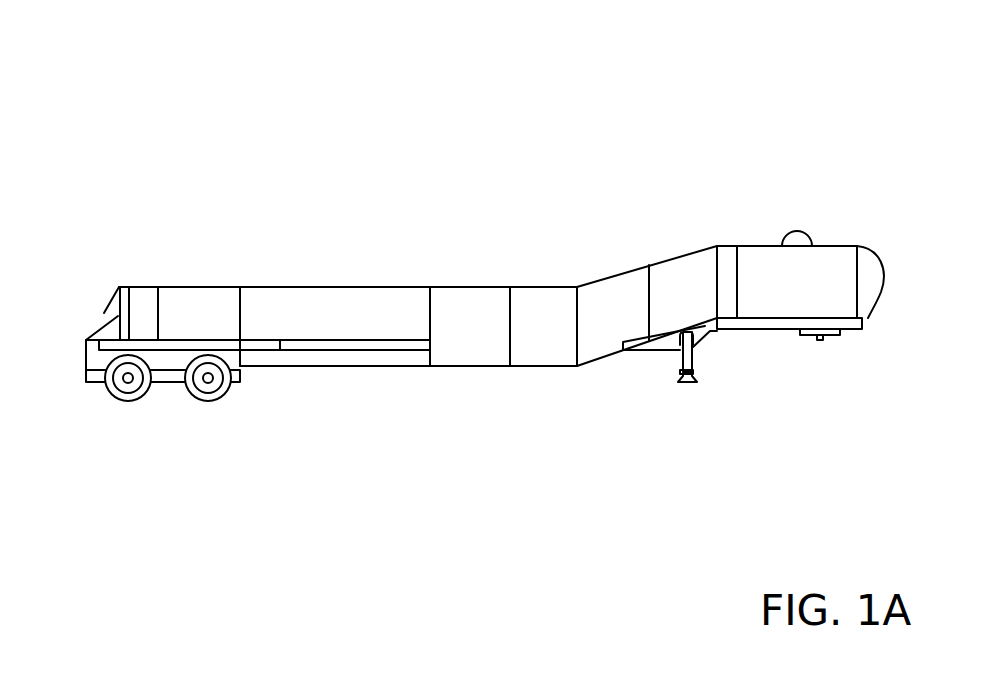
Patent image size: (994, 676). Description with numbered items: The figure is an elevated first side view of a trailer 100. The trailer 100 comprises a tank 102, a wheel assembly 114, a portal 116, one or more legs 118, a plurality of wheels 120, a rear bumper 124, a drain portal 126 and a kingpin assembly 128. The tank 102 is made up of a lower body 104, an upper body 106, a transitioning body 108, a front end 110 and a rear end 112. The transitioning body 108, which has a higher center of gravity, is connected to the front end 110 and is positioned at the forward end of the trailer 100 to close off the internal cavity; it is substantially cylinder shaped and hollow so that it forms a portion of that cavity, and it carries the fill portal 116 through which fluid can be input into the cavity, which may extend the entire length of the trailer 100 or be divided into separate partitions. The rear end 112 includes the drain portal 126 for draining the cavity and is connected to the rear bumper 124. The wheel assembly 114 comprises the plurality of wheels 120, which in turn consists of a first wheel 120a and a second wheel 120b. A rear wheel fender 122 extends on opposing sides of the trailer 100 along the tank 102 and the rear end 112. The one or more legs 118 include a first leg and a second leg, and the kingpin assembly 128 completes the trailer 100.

The trailer 100 is at (483, 303).
The tank 102 is at (330, 300).
The lower body 104 is at (212, 312).
The upper body 106 is at (761, 270).
The transitioning body 108 is at (622, 298).
The front end 110 is at (870, 308).
The rear end 112 is at (120, 287).
The wheel assembly 114 is at (240, 377).
The portal 116 is at (812, 240).
The one or more legs 118 is at (682, 357).
The plurality of wheels 120 is at (268, 452).
The first wheel 120a is at (218, 395).
The second wheel 120b is at (142, 397).
The rear wheel fender 122 is at (400, 350).
The rear bumper 124 is at (88, 382).
The drain portal 126 is at (106, 316).
The kingpin assembly 128 is at (812, 335).